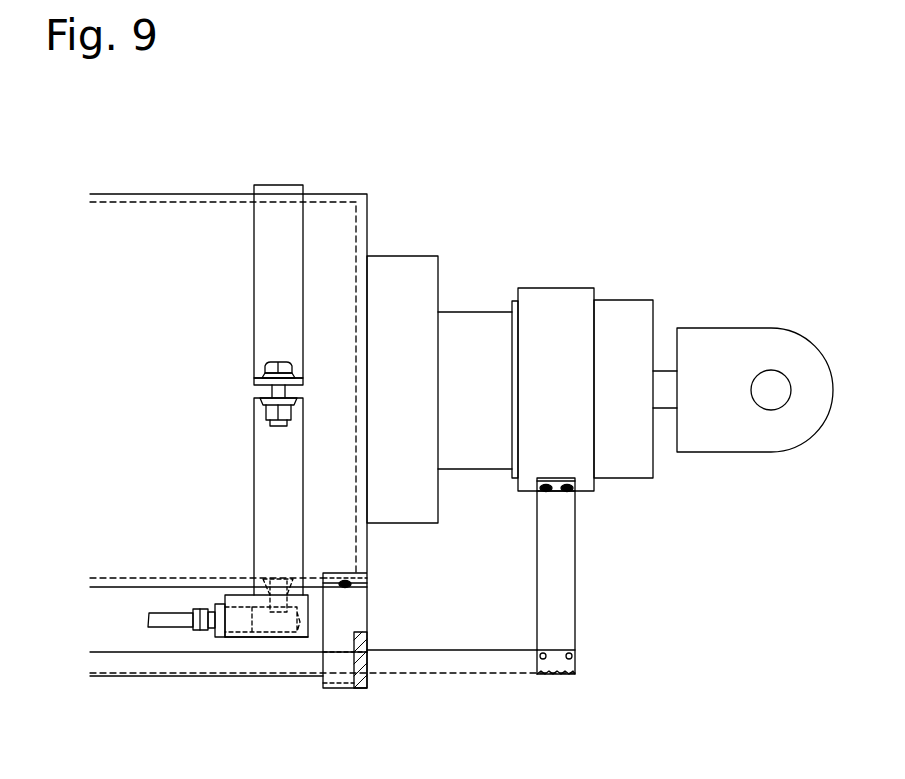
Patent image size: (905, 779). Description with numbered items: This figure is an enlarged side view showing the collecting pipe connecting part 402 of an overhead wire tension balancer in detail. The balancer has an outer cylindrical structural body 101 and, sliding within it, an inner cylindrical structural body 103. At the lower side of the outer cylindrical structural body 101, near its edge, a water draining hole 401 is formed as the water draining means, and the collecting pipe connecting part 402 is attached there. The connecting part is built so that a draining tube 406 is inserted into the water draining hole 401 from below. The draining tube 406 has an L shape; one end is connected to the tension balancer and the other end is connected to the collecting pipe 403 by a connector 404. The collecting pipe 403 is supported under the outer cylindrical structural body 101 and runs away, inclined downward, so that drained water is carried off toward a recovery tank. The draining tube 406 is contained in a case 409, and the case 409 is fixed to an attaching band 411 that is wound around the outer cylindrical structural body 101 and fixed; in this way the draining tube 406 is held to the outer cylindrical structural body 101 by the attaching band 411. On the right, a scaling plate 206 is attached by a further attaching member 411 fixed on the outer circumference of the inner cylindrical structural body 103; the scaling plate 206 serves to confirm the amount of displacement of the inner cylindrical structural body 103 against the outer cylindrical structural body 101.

The outer cylindrical structural body 101 is at (160, 194).
The inner cylindrical structural body 103 is at (470, 322).
The attaching band 411 is at (282, 185).
The water draining hole 401 is at (280, 578).
The case 409 is at (237, 594).
The connector 404 is at (200, 608).
The collecting pipe 403 is at (165, 628).
The draining tube 406 is at (240, 632).
The collecting pipe connecting part 402 is at (270, 641).
The scaling plate 206 is at (468, 658).